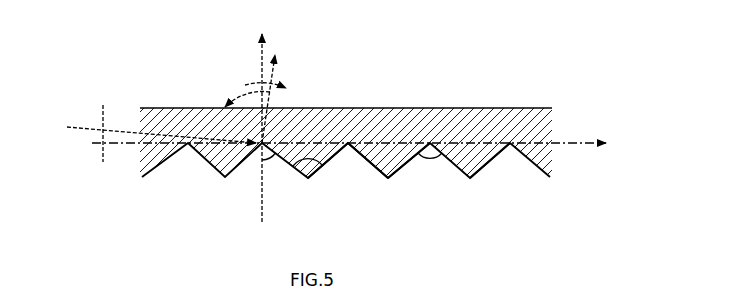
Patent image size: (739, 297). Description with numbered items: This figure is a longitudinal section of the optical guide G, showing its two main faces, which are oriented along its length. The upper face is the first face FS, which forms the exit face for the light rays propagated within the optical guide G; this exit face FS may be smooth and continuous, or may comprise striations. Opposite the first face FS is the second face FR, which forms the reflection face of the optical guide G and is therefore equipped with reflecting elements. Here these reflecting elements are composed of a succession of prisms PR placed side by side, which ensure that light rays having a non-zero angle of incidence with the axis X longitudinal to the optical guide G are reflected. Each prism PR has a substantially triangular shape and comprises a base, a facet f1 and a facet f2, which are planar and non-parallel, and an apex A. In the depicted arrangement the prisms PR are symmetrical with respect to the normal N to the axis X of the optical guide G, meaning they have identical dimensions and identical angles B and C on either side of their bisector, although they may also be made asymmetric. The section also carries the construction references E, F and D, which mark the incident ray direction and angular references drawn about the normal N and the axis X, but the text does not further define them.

The first face FS is at (427, 108).
The prisms PR is at (388, 179).
The facet f1 is at (372, 164).
The facet f2 is at (406, 163).
The second face FR is at (485, 166).
The normal N is at (252, 126).
The axis X is at (349, 133).
The incident light ray E is at (161, 133).
The optical guide G is at (269, 99).
The angle of incidence F is at (244, 99).
The apex A is at (308, 156).
The angle B is at (269, 166).
The angle C is at (330, 159).
The prism apex angle D is at (430, 166).